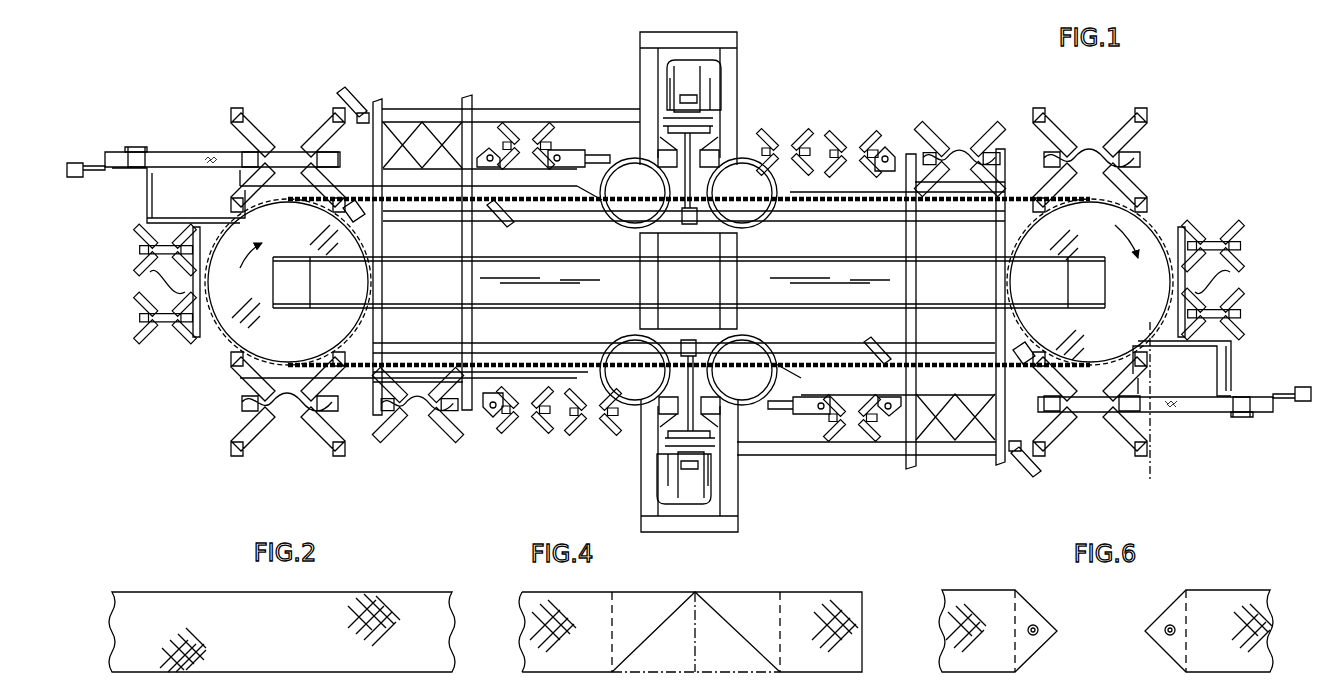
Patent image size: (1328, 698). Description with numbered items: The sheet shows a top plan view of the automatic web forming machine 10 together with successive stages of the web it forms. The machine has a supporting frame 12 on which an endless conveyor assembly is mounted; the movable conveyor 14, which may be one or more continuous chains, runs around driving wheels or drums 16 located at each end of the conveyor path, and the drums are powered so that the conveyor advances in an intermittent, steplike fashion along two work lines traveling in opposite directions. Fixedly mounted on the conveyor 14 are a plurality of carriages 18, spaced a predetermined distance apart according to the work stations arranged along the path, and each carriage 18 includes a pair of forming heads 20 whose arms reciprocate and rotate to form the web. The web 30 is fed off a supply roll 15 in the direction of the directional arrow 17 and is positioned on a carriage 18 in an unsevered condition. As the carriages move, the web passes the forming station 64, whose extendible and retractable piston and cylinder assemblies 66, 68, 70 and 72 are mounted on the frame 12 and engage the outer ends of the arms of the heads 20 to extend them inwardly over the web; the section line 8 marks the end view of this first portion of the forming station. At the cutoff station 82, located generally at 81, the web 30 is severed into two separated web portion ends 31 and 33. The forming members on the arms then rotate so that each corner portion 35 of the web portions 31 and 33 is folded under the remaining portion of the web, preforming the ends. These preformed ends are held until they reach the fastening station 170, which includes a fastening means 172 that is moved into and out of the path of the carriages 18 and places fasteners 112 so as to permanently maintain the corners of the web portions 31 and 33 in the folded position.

In FIG. 1, the forming station section line 8 is at (1150, 324).
In FIG. 1, the automatic web forming machine 10 is at (852, 72).
In FIG. 1, the supporting frame 12 is at (735, 243).
In FIG. 1, the movable conveyor 14 is at (565, 204).
In FIG. 1, the supply roll 15 is at (125, 157).
In FIG. 1, the driving wheels or drums 16 is at (352, 318).
In FIG. 1, the directional arrow 17 is at (186, 159).
In FIG. 1, the carriage 18 is at (297, 130).
In FIG. 1, the forming head 20 is at (137, 251).
In FIG. 1, the web 30 is at (217, 152).
In FIG. 2, the web 30 is at (366, 592).
In FIG. 4, the web portion end 31 is at (575, 672).
In FIG. 6, the web portion end 31 is at (992, 672).
In FIG. 4, the web portion end 33 is at (805, 672).
In FIG. 6, the web portion end 33 is at (1232, 672).
In FIG. 4, the corner portion 35 is at (610, 644).
In FIG. 1, the forming station 64 is at (418, 103).
In FIG. 1, the piston and cylinder assembly 66 is at (352, 96).
In FIG. 1, the piston and cylinder assembly 68 is at (363, 210).
In FIG. 1, the piston and cylinder assembly 70 is at (510, 222).
In FIG. 1, the piston and cylinder assembly 72 is at (483, 101).
In FIG. 1, the cutting station location 81 is at (566, 140).
In FIG. 1, the cutoff station 82 is at (492, 136).
In FIG. 6, the fastener 112 is at (1052, 632).
In FIG. 1, the fastening station 170 is at (962, 100).
In FIG. 1, the fastening means 172 is at (724, 98).